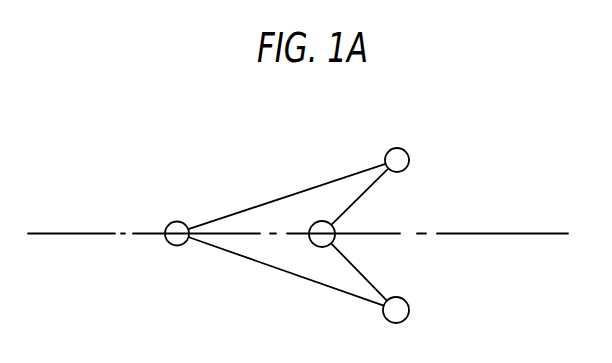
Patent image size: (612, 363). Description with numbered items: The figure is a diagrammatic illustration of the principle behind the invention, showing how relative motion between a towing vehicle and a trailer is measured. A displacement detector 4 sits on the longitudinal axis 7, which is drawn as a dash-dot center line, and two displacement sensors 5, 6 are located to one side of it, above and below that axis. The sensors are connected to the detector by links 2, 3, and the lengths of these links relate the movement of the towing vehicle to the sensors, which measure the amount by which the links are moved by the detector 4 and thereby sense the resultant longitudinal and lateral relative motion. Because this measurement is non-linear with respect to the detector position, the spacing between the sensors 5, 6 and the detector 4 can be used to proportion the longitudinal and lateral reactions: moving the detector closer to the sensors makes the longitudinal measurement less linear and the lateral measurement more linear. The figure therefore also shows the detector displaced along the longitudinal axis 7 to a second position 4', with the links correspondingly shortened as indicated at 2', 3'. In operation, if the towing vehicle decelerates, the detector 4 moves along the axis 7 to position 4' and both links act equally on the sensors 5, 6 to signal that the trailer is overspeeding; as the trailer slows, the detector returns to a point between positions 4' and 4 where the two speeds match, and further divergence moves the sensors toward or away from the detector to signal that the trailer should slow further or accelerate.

The link 2 is at (286, 195).
The shortened link 2' is at (373, 196).
The link 3 is at (285, 284).
The shortened link 3' is at (371, 271).
The displacement detector 4 is at (171, 262).
The displaced detector position 4' is at (317, 217).
The displacement sensor 5 is at (394, 148).
The displacement sensor 6 is at (409, 314).
The longitudinal axis 7 is at (85, 234).